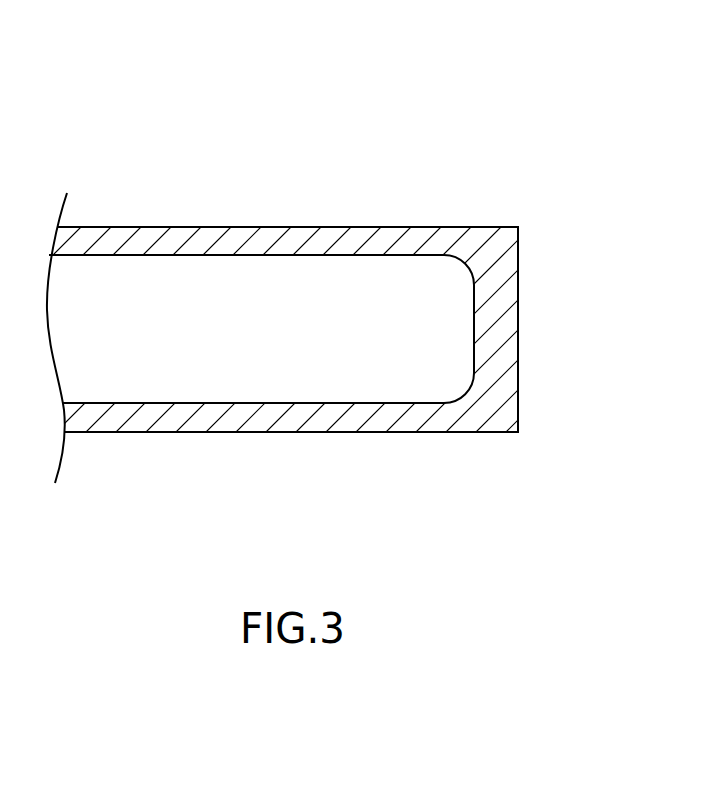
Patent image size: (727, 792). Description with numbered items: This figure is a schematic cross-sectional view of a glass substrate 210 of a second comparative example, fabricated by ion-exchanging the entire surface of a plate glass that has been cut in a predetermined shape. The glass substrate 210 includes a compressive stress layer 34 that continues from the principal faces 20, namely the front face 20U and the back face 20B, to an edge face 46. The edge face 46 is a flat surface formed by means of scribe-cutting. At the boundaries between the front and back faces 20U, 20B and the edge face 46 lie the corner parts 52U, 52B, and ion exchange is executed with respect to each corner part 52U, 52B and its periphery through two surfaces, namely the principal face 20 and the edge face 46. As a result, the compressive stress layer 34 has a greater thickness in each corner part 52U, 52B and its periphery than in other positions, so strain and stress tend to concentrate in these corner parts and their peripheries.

The glass substrate 210 is at (523, 99).
The principal faces 20 is at (223, 331).
The front face 20U is at (340, 212).
The back face 20B is at (282, 448).
The compressive stress layer 34 is at (149, 240).
The edge face 46 is at (532, 322).
The corner part 52U is at (518, 227).
The corner part 52B is at (518, 432).